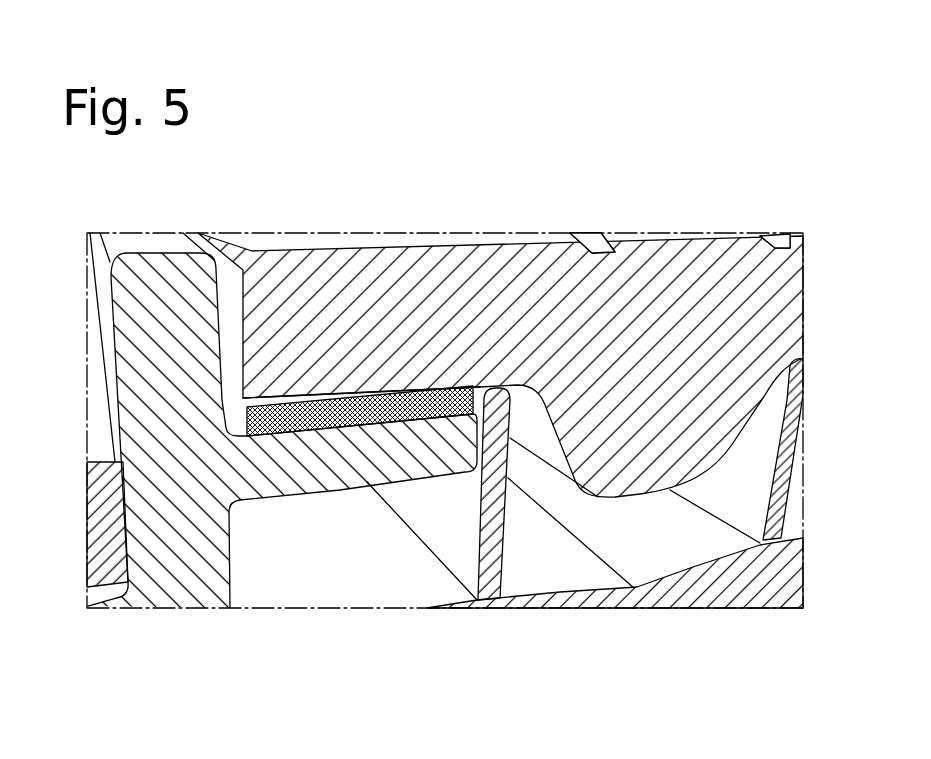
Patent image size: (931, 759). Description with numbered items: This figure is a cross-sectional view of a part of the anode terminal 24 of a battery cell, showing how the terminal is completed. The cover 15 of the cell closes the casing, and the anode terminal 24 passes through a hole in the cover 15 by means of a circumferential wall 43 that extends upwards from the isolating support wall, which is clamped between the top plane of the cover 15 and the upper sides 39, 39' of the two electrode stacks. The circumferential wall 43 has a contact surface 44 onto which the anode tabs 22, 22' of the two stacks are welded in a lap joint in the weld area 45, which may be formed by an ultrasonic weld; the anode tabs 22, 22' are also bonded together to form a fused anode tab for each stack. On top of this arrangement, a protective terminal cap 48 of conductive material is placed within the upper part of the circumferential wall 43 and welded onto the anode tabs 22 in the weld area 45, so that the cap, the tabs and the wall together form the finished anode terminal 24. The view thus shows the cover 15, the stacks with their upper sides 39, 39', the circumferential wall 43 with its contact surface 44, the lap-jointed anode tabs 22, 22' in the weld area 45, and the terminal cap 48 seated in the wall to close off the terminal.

The cover 15 is at (102, 536).
The anode tab 22 is at (360, 306).
The anode tab 22' is at (822, 449).
The anode terminal 24 is at (665, 205).
The upper side of stack 39 is at (417, 582).
The upper side of stack 39' is at (634, 553).
The circumferential wall 43 is at (146, 240).
The contact surface 44 is at (313, 470).
The weld area 45 is at (390, 389).
The protective terminal cap 48 is at (520, 267).